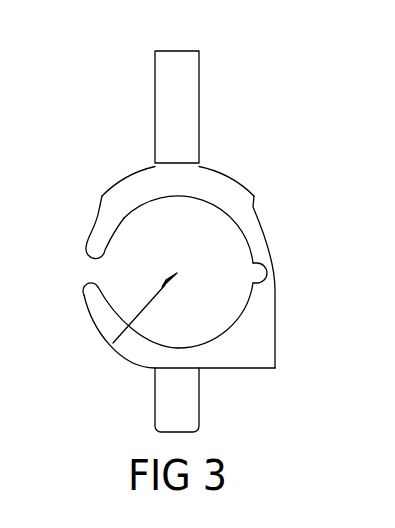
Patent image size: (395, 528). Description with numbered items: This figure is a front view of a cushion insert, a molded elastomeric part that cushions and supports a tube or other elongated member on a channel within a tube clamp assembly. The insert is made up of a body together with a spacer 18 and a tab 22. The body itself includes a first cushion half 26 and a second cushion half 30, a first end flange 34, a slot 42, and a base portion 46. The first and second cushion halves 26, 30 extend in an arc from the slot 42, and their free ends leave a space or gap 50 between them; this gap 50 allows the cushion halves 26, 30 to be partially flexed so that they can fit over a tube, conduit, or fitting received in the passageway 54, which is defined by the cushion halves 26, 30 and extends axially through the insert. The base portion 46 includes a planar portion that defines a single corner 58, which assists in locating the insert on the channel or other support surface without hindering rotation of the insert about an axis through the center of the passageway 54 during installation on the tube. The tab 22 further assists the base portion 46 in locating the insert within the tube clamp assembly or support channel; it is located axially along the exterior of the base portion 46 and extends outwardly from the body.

The spacer 18 is at (187, 77).
The tab 22 is at (168, 407).
The first end flange 34 is at (130, 185).
The first cushion half 26 is at (97, 240).
The gap 50 is at (93, 271).
The second cushion half 30 is at (97, 305).
The passageway 54 is at (113, 345).
The base portion 46 is at (228, 355).
The single corner 58 is at (275, 368).
The slot 42 is at (257, 271).